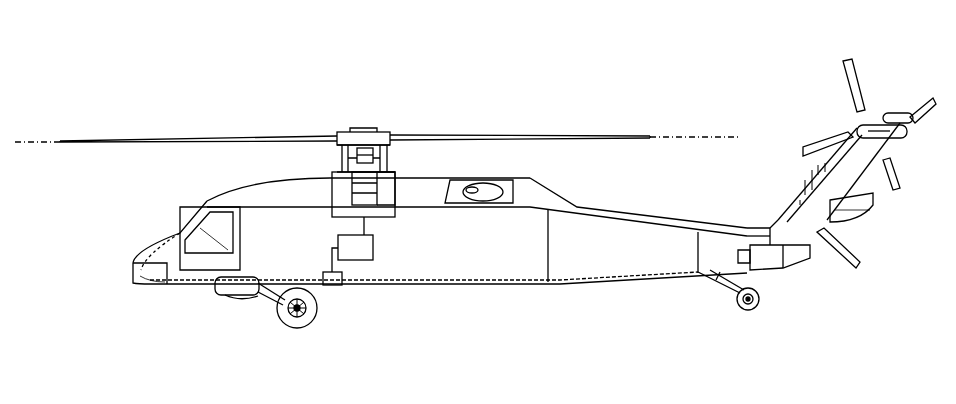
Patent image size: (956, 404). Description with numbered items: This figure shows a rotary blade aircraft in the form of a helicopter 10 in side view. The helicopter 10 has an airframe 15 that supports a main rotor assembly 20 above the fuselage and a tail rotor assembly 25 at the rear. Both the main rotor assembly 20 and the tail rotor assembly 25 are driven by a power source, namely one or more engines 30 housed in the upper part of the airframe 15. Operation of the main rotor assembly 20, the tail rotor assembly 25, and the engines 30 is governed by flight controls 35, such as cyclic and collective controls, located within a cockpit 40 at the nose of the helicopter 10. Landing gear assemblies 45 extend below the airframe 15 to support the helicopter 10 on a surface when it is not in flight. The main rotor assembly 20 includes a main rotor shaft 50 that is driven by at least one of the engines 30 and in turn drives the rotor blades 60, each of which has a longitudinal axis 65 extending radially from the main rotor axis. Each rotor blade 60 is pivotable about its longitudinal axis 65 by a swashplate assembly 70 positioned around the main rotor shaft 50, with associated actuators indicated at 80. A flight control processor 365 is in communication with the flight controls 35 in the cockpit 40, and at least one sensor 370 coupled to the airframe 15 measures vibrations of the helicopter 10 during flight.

The helicopter 10 is at (688, 78).
The airframe 15 is at (592, 283).
The main rotor assembly 20 is at (359, 107).
The tail rotor assembly 25 is at (885, 95).
The engines 30 is at (505, 190).
The flight controls 35 is at (207, 236).
The cockpit 40 is at (197, 262).
The landing gear 45 is at (295, 325).
The main rotor shaft 50 is at (368, 158).
The rotor blades 60 is at (187, 135).
The longitudinal axis 65 is at (38, 148).
The swashplate assembly 70 is at (332, 172).
The actuators 80 is at (342, 160).
The flight control processor 365 is at (368, 250).
The sensor 370 is at (333, 288).